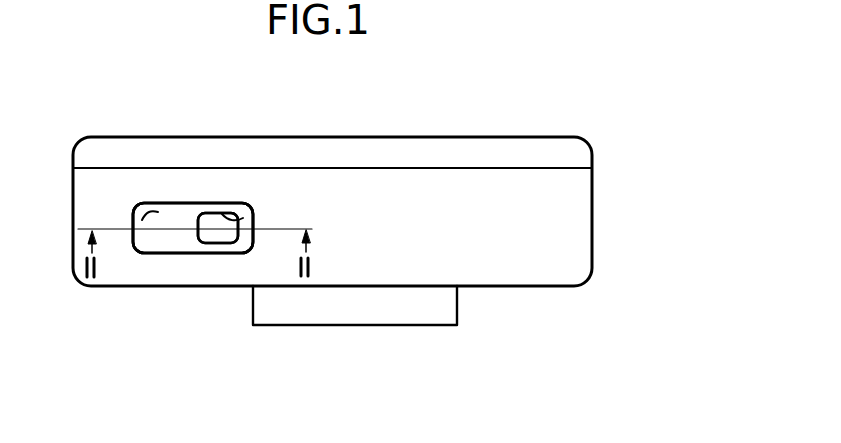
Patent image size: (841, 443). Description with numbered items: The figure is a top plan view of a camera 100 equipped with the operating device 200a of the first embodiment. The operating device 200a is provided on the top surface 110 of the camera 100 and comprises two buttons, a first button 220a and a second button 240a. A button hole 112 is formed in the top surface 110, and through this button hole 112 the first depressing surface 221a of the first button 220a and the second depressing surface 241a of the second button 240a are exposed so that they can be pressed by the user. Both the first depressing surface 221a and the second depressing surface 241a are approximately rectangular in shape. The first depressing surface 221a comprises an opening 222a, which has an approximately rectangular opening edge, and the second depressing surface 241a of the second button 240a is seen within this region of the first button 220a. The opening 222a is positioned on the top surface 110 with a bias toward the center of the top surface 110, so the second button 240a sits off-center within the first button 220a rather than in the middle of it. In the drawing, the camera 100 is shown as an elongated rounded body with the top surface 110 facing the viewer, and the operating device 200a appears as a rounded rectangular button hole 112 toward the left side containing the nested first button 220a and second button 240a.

The camera 100 is at (586, 130).
The top surface 110 is at (577, 221).
The button hole 112 is at (142, 220).
The operating device 200a is at (220, 194).
The first button 220a is at (162, 256).
The first depressing surface 221a is at (150, 242).
The opening 222a is at (242, 220).
The second button 240a is at (217, 255).
The second depressing surface 241a is at (230, 237).